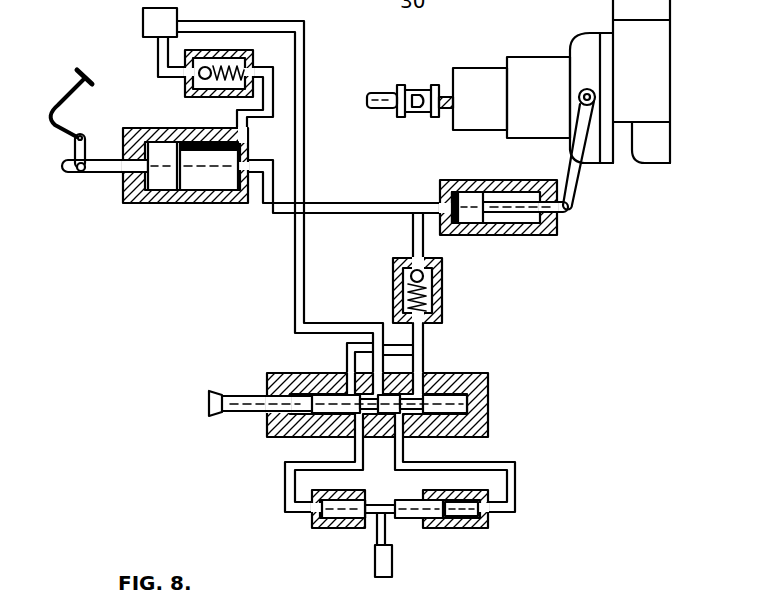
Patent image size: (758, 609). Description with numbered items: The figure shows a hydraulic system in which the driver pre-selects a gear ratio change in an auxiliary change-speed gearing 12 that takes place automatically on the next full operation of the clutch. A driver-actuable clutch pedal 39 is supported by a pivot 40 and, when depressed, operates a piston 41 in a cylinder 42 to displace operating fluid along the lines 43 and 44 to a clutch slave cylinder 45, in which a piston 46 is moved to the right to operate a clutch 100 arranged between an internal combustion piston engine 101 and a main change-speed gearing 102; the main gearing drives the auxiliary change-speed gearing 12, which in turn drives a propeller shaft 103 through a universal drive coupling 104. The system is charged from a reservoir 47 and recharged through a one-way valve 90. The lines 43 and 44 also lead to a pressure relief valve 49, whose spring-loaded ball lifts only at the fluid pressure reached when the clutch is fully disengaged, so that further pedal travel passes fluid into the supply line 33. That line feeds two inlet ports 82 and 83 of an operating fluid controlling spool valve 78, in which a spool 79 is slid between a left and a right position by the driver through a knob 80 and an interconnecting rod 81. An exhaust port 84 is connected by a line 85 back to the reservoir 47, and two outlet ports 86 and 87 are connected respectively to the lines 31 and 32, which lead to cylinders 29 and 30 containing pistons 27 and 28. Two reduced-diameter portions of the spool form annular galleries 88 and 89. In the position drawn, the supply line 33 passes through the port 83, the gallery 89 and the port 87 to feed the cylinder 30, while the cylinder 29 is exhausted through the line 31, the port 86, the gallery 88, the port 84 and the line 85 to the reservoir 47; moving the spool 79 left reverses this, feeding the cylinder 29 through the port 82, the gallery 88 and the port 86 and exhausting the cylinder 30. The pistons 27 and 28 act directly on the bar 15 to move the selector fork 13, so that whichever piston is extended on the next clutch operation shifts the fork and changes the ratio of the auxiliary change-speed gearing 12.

The auxiliary change-speed gearing 12 is at (478, 75).
The selector fork 13 is at (392, 570).
The bar 15 is at (380, 504).
The piston 27 is at (342, 510).
The piston 28 is at (418, 512).
The cylinder 29 is at (315, 526).
The cylinder 30 is at (474, 526).
The line 31 is at (285, 500).
The line 32 is at (515, 500).
The fluid supply line 33 is at (423, 339).
The clutch pedal 39 is at (91, 74).
The pivot 40 is at (72, 138).
The piston 41 is at (165, 178).
The cylinder 42 is at (222, 186).
The line 43 is at (362, 208).
The line 44 is at (438, 207).
The clutch slave cylinder 45 is at (455, 192).
The piston 46 is at (472, 198).
The reservoir 47 is at (143, 22).
The pressure relief valve 49 is at (442, 284).
The spool valve 78 is at (478, 426).
The spool 79 is at (465, 401).
The knob 80 is at (211, 394).
The interconnecting rod 81 is at (226, 412).
The inlet port 82 is at (328, 375).
The inlet port 83 is at (436, 378).
The exhaust port 84 is at (343, 380).
The line 85 is at (300, 113).
The outlet port 86 is at (353, 433).
The outlet port 87 is at (413, 437).
The annular gallery 88 is at (322, 432).
The annular gallery 89 is at (392, 437).
The one-way valve 90 is at (185, 92).
The clutch 100 is at (593, 48).
The internal combustion piston engine 101 is at (653, 79).
The main change-speed gearing 102 is at (533, 68).
The propeller shaft 103 is at (384, 93).
The universal drive coupling 104 is at (421, 85).